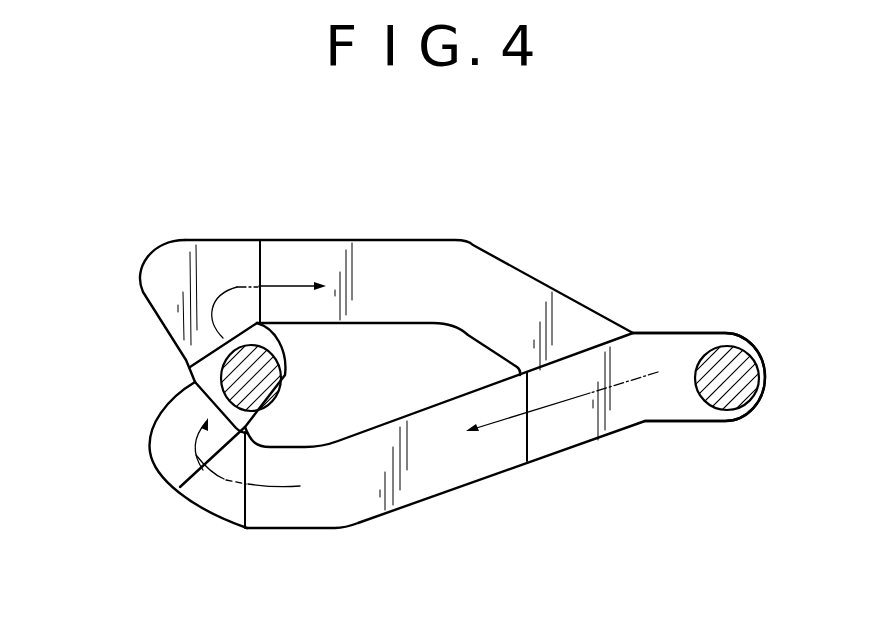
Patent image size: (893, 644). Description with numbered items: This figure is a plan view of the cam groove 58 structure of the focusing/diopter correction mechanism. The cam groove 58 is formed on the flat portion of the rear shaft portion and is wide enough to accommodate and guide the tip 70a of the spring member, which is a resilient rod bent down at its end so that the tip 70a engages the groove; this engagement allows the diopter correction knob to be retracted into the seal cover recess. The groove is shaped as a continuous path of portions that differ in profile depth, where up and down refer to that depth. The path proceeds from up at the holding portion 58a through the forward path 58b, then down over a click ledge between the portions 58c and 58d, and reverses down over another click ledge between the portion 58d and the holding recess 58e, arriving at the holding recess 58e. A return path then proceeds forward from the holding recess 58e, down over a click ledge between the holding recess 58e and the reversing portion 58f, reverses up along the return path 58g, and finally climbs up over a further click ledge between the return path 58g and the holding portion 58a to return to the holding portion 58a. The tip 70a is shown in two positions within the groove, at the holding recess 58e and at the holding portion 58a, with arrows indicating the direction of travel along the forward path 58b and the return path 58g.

The cam groove 58 is at (598, 278).
The holding portion 58a is at (662, 403).
The forward path 58b is at (455, 460).
The cam groove portion 58c is at (221, 503).
The cam groove portion 58d is at (171, 443).
The holding recess 58e is at (195, 382).
The reversing portion 58f is at (223, 260).
The return path 58g is at (415, 260).
The tip 70a is at (283, 360).